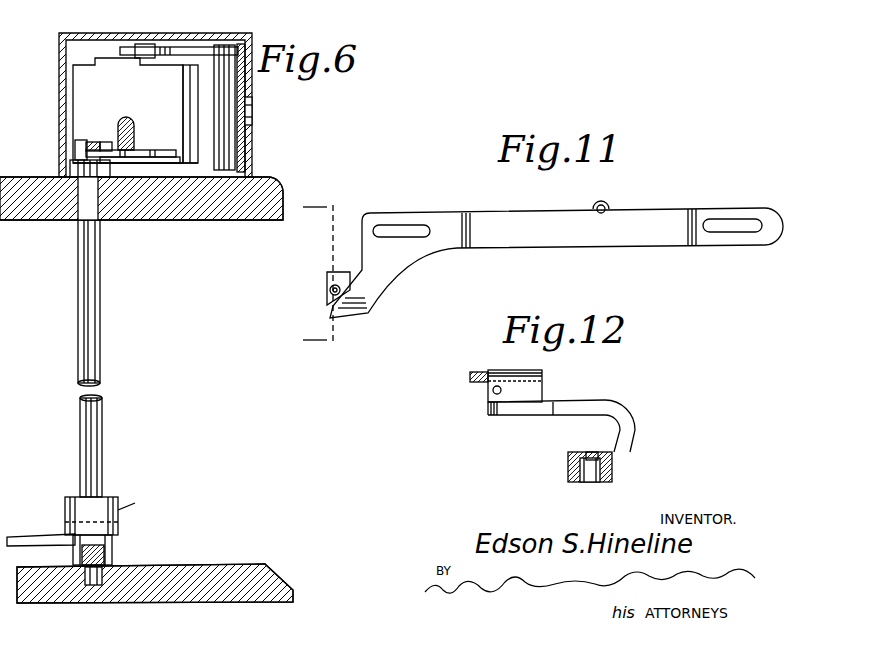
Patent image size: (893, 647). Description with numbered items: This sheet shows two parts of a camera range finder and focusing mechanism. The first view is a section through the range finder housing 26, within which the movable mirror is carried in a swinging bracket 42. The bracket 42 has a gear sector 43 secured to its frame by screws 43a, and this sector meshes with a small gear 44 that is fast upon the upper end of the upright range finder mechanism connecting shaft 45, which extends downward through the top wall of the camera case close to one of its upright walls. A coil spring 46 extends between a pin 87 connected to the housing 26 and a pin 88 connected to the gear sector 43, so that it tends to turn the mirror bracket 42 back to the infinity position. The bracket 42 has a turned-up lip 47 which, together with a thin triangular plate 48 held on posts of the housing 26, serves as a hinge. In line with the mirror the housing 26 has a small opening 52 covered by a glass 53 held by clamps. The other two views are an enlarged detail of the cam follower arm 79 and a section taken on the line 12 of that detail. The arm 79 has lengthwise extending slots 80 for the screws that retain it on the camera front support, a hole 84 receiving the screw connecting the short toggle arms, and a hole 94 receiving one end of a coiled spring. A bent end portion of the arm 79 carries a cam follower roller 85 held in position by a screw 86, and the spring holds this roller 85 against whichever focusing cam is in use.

In FIG. 6, the range finder housing 26 is at (238, 36).
In FIG. 6, the swinging bracket 42 is at (200, 145).
In FIG. 6, the gear sector 43 is at (136, 162).
In FIG. 6, the screws 43a is at (90, 140).
In FIG. 6, the small gear 44 is at (71, 168).
In FIG. 6, the range finder mechanism connecting shaft 45 is at (93, 259).
In FIG. 6, the coil spring 46 is at (107, 140).
In FIG. 6, the turned-up lip 47 is at (178, 176).
In FIG. 6, the thin triangular plate 48 is at (181, 50).
In FIG. 6, the small opening 52 is at (253, 122).
In FIG. 6, the glass 53 is at (253, 89).
In FIG. 11, the cam follower arm 79 is at (535, 220).
In FIG. 11, the lengthwise extending slots 80 is at (399, 228).
In FIG. 11, the hole 84 is at (607, 205).
In FIG. 11, the cam follower roller 85 is at (326, 291).
In FIG. 12, the cam follower roller 85 is at (568, 470).
In FIG. 12, the screw 86 is at (594, 452).
In FIG. 6, the pin 87 is at (76, 136).
In FIG. 6, the pin 88 is at (128, 138).
In FIG. 12, the hole 94 is at (492, 391).
In FIG. 11, the section line 12— 12 is at (319, 271).